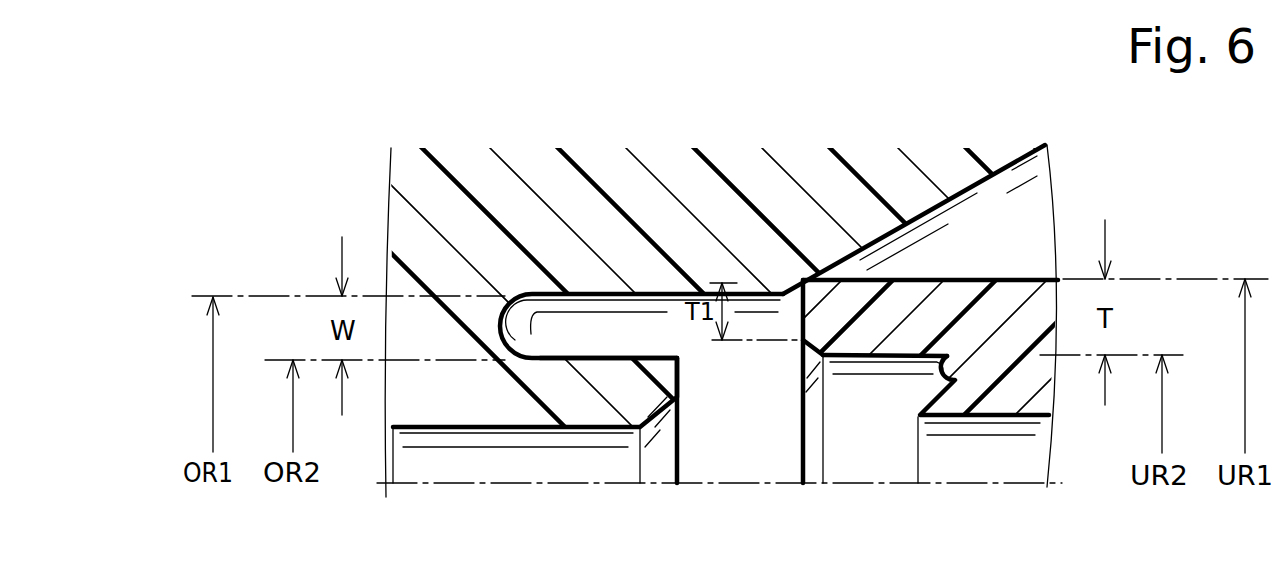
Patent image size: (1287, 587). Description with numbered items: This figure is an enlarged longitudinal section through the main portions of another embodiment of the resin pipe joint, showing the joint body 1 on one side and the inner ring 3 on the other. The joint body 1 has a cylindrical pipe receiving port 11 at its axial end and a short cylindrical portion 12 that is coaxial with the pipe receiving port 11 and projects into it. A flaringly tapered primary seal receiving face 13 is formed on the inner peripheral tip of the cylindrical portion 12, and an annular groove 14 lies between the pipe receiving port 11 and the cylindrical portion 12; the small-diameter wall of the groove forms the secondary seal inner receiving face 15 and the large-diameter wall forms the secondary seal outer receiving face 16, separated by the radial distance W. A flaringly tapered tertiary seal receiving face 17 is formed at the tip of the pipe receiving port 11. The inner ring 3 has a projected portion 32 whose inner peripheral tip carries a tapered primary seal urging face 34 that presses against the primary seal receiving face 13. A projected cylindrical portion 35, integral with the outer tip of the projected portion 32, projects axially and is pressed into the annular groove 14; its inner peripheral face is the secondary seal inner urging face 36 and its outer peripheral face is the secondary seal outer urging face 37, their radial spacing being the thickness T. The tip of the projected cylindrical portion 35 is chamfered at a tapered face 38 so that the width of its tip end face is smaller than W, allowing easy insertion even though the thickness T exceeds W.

The joint body 1 is at (412, 148).
The inner ring 3 is at (1050, 405).
The pipe receiving port 11 is at (735, 165).
The short cylindrical portion 12 is at (575, 417).
The primary seal receiving face 13 is at (657, 415).
The annular groove 14 is at (542, 340).
The secondary seal inner receiving face 15 is at (613, 343).
The secondary seal outer receiving face 16 is at (603, 297).
The tertiary seal receiving face 17 is at (983, 182).
The projected portion 32 is at (1007, 407).
The primary seal urging face 34 is at (930, 392).
The projected cylindrical portion 35 is at (921, 281).
The secondary seal inner urging face 36 is at (857, 358).
The secondary seal outer urging face 37 is at (851, 254).
The chamfered face 38 is at (803, 343).